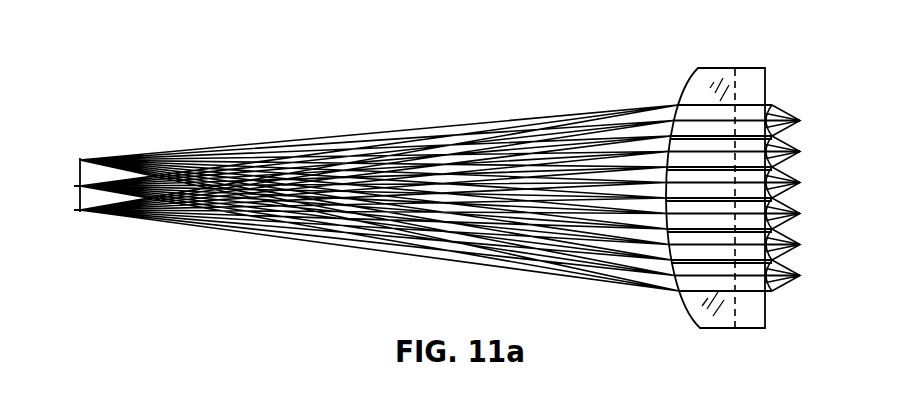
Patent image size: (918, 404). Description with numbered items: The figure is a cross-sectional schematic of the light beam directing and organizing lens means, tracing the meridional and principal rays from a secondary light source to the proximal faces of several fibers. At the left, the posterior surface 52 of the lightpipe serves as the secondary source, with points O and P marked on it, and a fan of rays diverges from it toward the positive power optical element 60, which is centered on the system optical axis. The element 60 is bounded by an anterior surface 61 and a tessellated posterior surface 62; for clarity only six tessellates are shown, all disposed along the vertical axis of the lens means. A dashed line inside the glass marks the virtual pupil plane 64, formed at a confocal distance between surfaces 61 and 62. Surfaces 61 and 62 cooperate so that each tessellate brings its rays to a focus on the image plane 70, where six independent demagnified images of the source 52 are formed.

The posterior surface of lightpipe 52 is at (82, 158).
The positive power optical element 60 is at (710, 87).
The anterior surface 61 is at (690, 316).
The posterior surface 62 is at (773, 106).
The virtual pupil plane 64 is at (742, 92).
The image plane 70 is at (801, 277).